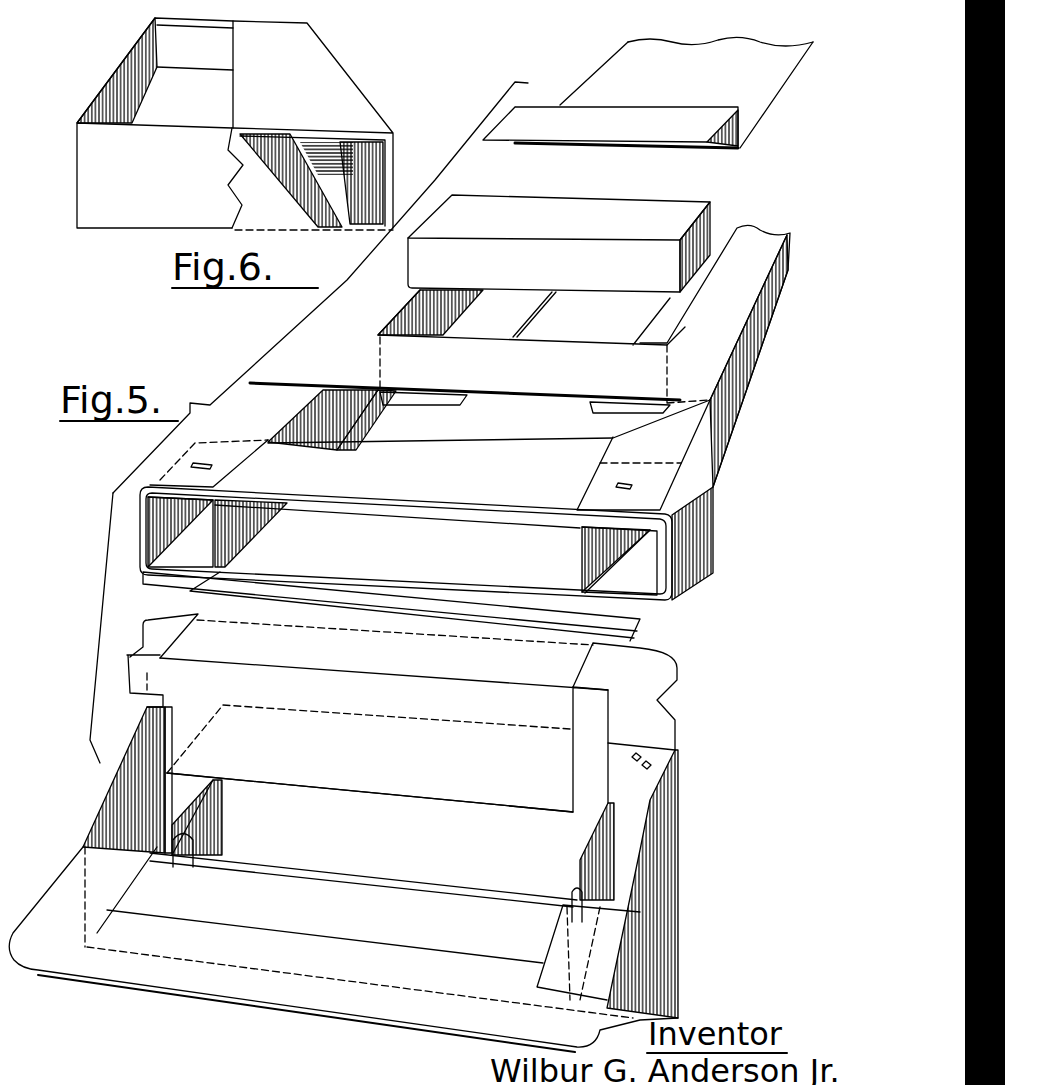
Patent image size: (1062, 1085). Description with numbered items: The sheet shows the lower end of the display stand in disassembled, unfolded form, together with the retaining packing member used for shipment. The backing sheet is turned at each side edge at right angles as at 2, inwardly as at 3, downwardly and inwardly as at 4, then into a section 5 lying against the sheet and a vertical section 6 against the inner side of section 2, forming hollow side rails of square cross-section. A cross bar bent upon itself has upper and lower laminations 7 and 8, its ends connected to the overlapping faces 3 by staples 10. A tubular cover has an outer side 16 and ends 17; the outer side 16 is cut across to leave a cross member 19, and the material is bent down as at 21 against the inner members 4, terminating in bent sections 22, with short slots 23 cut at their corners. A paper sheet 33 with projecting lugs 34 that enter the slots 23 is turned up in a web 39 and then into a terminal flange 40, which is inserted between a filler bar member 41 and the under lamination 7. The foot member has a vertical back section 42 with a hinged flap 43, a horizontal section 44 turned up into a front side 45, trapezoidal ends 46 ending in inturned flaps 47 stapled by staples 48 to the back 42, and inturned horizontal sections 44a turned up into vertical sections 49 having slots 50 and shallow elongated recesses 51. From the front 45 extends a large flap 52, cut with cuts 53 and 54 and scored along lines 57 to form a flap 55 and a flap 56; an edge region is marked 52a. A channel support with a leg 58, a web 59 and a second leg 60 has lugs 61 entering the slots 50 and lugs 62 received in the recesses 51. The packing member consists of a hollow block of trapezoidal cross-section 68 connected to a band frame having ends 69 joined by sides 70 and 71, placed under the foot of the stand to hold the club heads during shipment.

In FIG. 5, the right-angle turned section 2 is at (138, 523).
In FIG. 5, the outer face of side rail 3 is at (243, 410).
In FIG. 5, the inner member of side rail 4 is at (330, 428).
In FIG. 5, the rail bottom section 5 is at (163, 581).
In FIG. 5, the vertical terminal section 6 is at (147, 537).
In FIG. 5, the upper lamination of cross bar 7 is at (440, 519).
In FIG. 5, the lower lamination of cross bar 8 is at (448, 470).
In FIG. 5, the staples 10 is at (212, 462).
In FIG. 5, the outer side of cover envelope 16 is at (372, 282).
In FIG. 5, the ends of cover envelope 17 is at (740, 390).
In FIG. 5, the lower connecting cross member 19 is at (532, 385).
In FIG. 5, the downwardly bent cover section 21 is at (413, 322).
In FIG. 5, the right-angle bent sections 22 is at (653, 323).
In FIG. 5, the short slots 23 is at (445, 318).
In FIG. 5, the paper sheet 33 is at (708, 55).
In FIG. 5, the projecting lugs 34 is at (582, 82).
In FIG. 5, the web 39 is at (737, 120).
In FIG. 5, the terminal flange 40 is at (657, 130).
In FIG. 5, the filler bar member 41 is at (663, 217).
In FIG. 5, the vertical back section 42 is at (400, 872).
In FIG. 5, the flap 43 is at (643, 672).
In FIG. 5, the horizontal section 44 is at (352, 865).
In FIG. 5, the inturned horizontal sections 44a is at (630, 900).
In FIG. 5, the front side 45 is at (630, 988).
In FIG. 5, the ends 46 is at (117, 812).
In FIG. 5, the inturned flaps 47 is at (158, 752).
In FIG. 5, the staples 48 is at (653, 757).
In FIG. 5, the vertical sections 49 is at (202, 833).
In FIG. 5, the slots 50 is at (577, 873).
In FIG. 5, the shallow elongated recesses 51 is at (223, 788).
In FIG. 5, the flap 52 is at (310, 993).
In FIG. 5, the bottom plate panel 52a is at (63, 893).
In FIG. 5, the cuts 53 is at (135, 877).
In FIG. 5, the cut 54 is at (300, 933).
In FIG. 5, the flap 55 is at (253, 907).
In FIG. 5, the flap 56 is at (423, 957).
In FIG. 5, the scoring lines 57 is at (23, 928).
In FIG. 5, the leg 58 is at (463, 667).
In FIG. 5, the web 59 is at (485, 790).
In FIG. 5, the second leg 60 is at (583, 762).
In FIG. 5, the projecting lugs 61 is at (138, 675).
In FIG. 5, the projecting lugs 62 is at (222, 582).
In FIG. 6, the hollow block 68 is at (373, 163).
In FIG. 6, the ends of band frame 69 is at (193, 83).
In FIG. 6, the side of band frame 70 is at (107, 93).
In FIG. 6, the side of band frame 71 is at (353, 78).